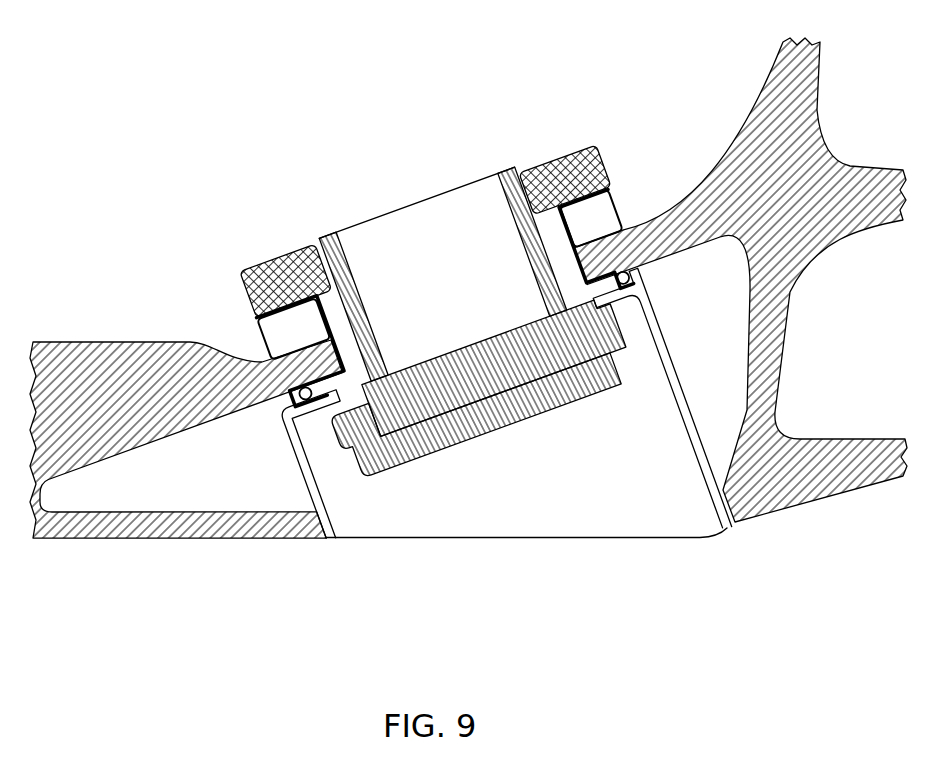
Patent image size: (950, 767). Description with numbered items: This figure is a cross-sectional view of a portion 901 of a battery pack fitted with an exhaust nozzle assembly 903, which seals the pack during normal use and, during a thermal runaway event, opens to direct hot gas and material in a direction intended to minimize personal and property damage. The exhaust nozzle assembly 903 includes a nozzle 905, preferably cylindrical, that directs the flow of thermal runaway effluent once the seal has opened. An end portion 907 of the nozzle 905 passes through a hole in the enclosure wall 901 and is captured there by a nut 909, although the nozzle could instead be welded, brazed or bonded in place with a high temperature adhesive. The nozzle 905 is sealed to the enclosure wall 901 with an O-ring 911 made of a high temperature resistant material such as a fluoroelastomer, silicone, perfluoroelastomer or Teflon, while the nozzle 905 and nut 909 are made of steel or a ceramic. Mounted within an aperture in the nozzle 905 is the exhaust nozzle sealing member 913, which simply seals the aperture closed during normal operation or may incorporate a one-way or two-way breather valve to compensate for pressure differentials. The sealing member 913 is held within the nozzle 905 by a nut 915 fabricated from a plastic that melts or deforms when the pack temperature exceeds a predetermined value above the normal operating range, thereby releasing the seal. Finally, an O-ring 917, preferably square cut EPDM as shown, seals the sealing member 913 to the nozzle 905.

The enclosure wall 901 is at (136, 421).
The exhaust nozzle assembly 903 is at (590, 580).
The nozzle 905 is at (680, 417).
The end portion 907 is at (344, 344).
The nut 909 is at (600, 228).
The O-ring 911 is at (300, 384).
The exhaust nozzle sealing member 913 is at (457, 388).
The nut 915 is at (570, 178).
The O-ring 917 is at (310, 406).